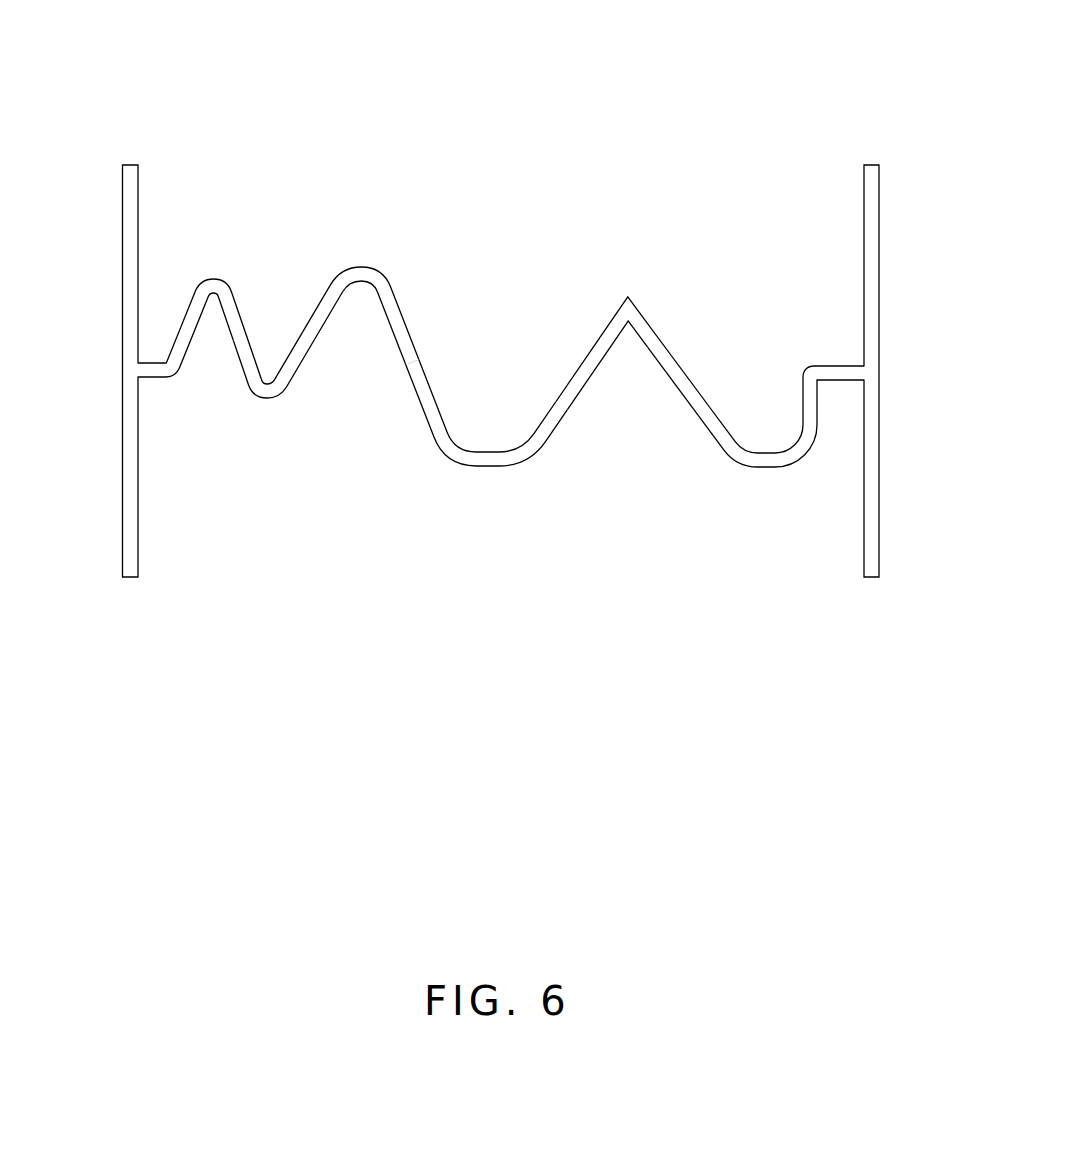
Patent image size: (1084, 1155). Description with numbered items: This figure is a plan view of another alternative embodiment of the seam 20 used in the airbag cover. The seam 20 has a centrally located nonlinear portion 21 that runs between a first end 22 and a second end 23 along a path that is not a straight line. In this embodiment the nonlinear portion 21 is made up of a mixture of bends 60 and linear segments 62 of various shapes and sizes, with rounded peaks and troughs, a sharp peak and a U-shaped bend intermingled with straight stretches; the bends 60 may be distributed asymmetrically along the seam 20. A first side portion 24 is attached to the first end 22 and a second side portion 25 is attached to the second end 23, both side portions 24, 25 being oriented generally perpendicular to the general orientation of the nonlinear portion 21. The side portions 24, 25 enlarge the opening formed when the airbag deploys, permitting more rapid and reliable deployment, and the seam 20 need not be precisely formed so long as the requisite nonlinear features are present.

The seam 20 is at (501, 334).
The nonlinear portion 21 is at (501, 335).
The first end 22 is at (195, 470).
The second end 23 is at (746, 565).
The first side portion 24 is at (130, 220).
The second side portion 25 is at (870, 185).
The bends 60 is at (172, 372).
The linear segments 62 is at (580, 382).